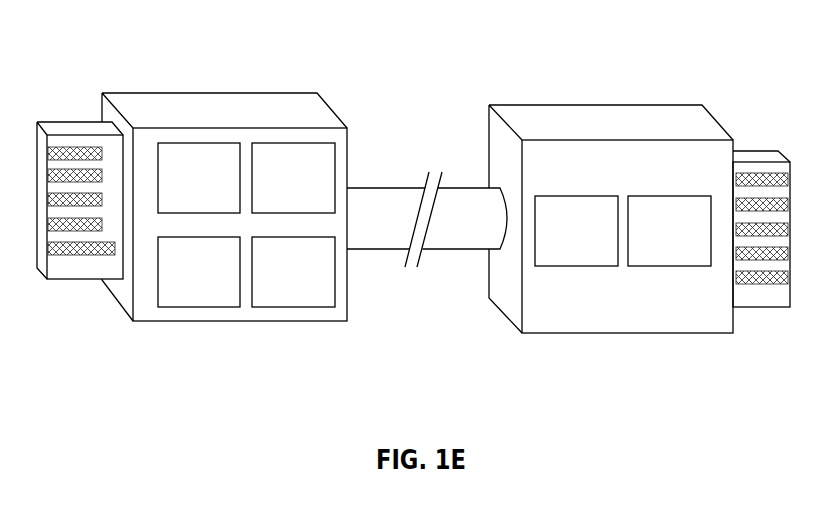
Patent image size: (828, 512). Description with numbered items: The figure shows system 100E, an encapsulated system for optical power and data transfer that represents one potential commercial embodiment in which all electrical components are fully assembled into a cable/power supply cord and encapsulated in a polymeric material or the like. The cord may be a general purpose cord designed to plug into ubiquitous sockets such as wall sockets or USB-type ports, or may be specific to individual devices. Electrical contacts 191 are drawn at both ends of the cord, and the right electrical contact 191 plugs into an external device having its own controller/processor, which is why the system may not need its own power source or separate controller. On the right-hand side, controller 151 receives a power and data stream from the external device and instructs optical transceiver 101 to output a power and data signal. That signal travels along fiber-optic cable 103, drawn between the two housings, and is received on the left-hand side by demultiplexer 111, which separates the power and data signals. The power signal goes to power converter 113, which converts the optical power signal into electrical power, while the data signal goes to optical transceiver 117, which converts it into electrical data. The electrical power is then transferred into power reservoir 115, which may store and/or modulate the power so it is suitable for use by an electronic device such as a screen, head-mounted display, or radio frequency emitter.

The system for optical power and data transfer 100E is at (393, 26).
The electrical contacts 191 is at (65, 267).
The power reservoir 115 is at (188, 184).
The demultiplexer 111 is at (282, 184).
The optical transceiver 117 is at (188, 278).
The power converter 113 is at (282, 278).
The fiber-optic cable 103 is at (372, 224).
The optical transceiver 101 is at (566, 236).
The controller 151 is at (658, 236).